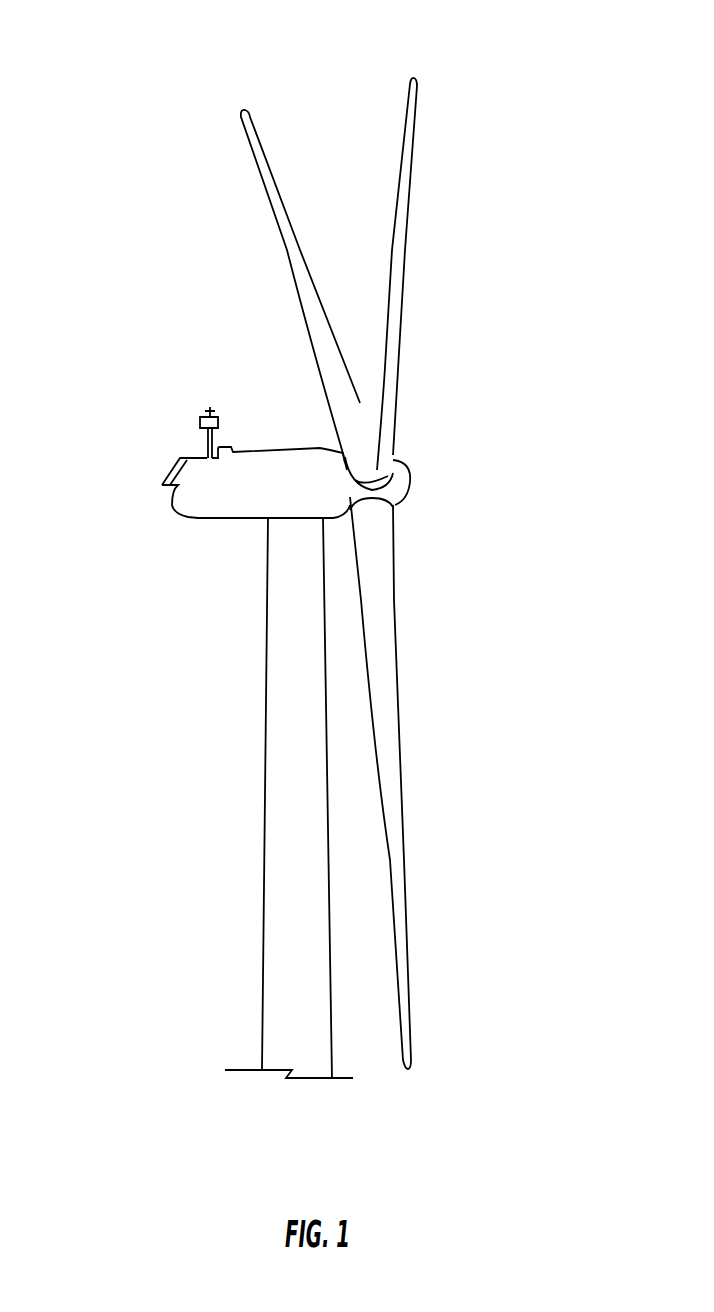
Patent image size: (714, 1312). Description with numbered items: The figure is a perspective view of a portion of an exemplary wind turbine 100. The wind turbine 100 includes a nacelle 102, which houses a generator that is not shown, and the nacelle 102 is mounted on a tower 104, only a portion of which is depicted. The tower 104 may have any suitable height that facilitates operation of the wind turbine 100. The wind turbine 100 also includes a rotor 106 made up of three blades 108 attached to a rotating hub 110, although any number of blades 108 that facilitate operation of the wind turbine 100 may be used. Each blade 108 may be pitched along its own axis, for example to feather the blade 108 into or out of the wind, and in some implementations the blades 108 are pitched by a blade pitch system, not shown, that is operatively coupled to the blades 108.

The wind turbine 100 is at (157, 72).
The nacelle 102 is at (213, 520).
The tower 104 is at (263, 775).
The rotor 106 is at (470, 215).
The blades 108 is at (285, 205).
The rotating hub 110 is at (412, 500).